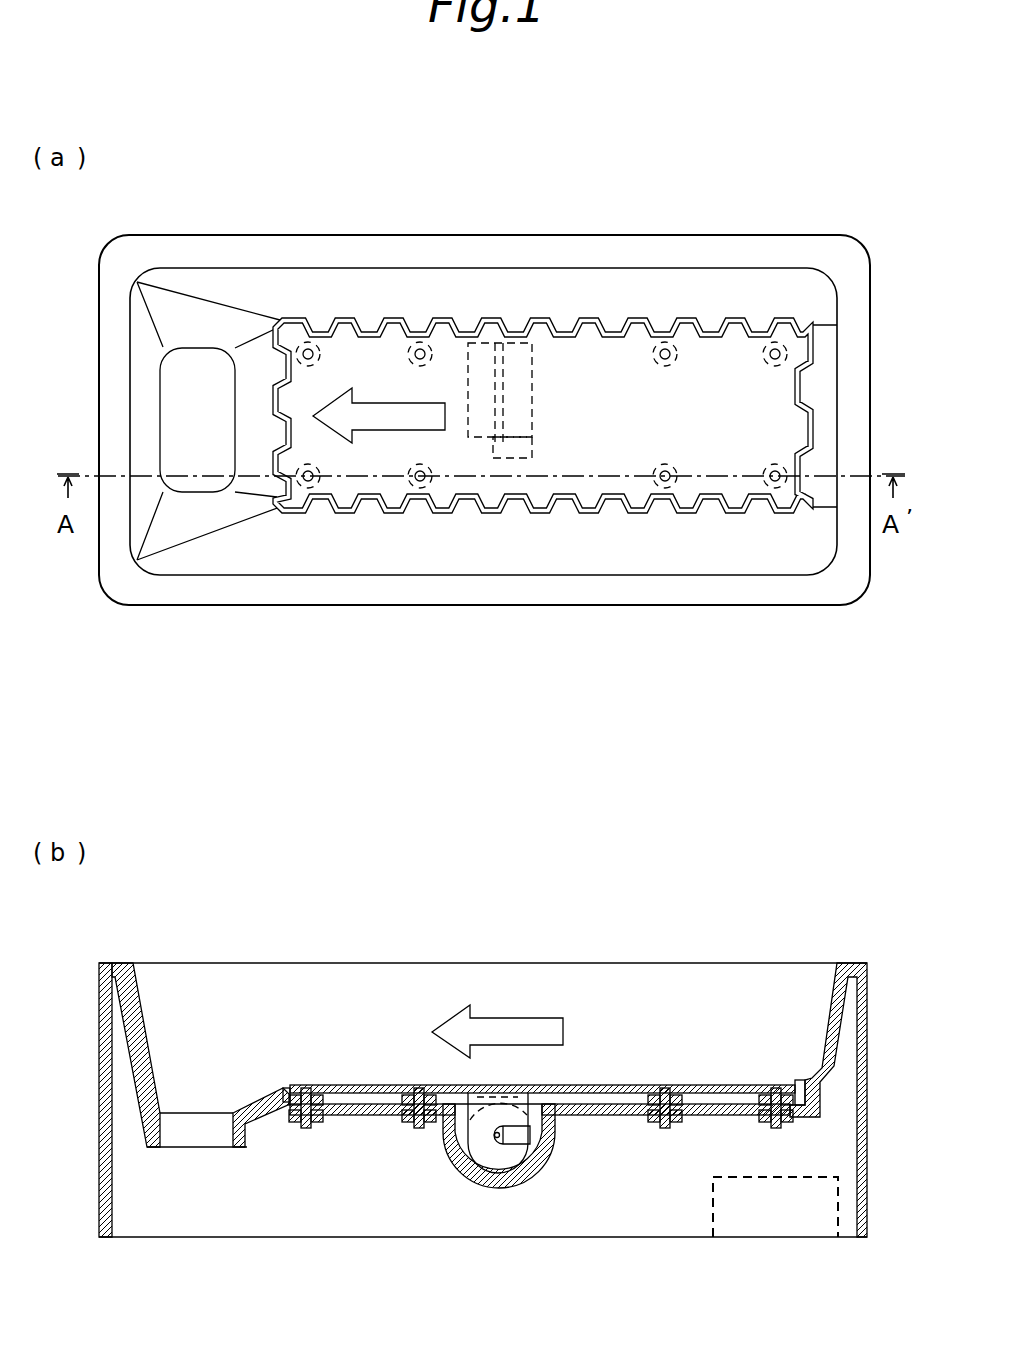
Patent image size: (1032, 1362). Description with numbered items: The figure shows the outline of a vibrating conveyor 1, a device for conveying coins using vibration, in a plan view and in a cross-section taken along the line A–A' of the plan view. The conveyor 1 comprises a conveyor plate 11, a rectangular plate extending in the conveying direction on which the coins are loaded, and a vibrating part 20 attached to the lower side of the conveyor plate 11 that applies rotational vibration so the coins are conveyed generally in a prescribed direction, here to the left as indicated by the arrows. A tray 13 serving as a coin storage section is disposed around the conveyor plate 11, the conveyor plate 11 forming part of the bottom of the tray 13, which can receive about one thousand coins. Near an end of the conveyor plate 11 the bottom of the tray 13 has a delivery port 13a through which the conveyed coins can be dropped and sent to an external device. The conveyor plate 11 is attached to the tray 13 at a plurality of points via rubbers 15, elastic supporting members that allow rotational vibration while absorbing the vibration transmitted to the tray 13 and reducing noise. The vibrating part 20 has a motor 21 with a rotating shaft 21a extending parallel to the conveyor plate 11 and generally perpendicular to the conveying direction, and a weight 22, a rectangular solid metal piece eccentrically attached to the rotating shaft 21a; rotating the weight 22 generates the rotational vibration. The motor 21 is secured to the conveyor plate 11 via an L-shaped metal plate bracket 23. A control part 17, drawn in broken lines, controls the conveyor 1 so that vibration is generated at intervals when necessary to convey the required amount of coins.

The vibrating conveyor 1 is at (487, 177).
The conveyor plate 11 is at (592, 343).
The tray 13 is at (824, 983).
The delivery port 13a is at (200, 1098).
The rubbers 15 is at (690, 345).
The control part 17 is at (752, 1212).
The vibrating part 20 is at (460, 373).
The motor 21 is at (533, 381).
The rotating shaft 21a is at (503, 406).
The weight 22 is at (532, 449).
The bracket 23 is at (468, 437).